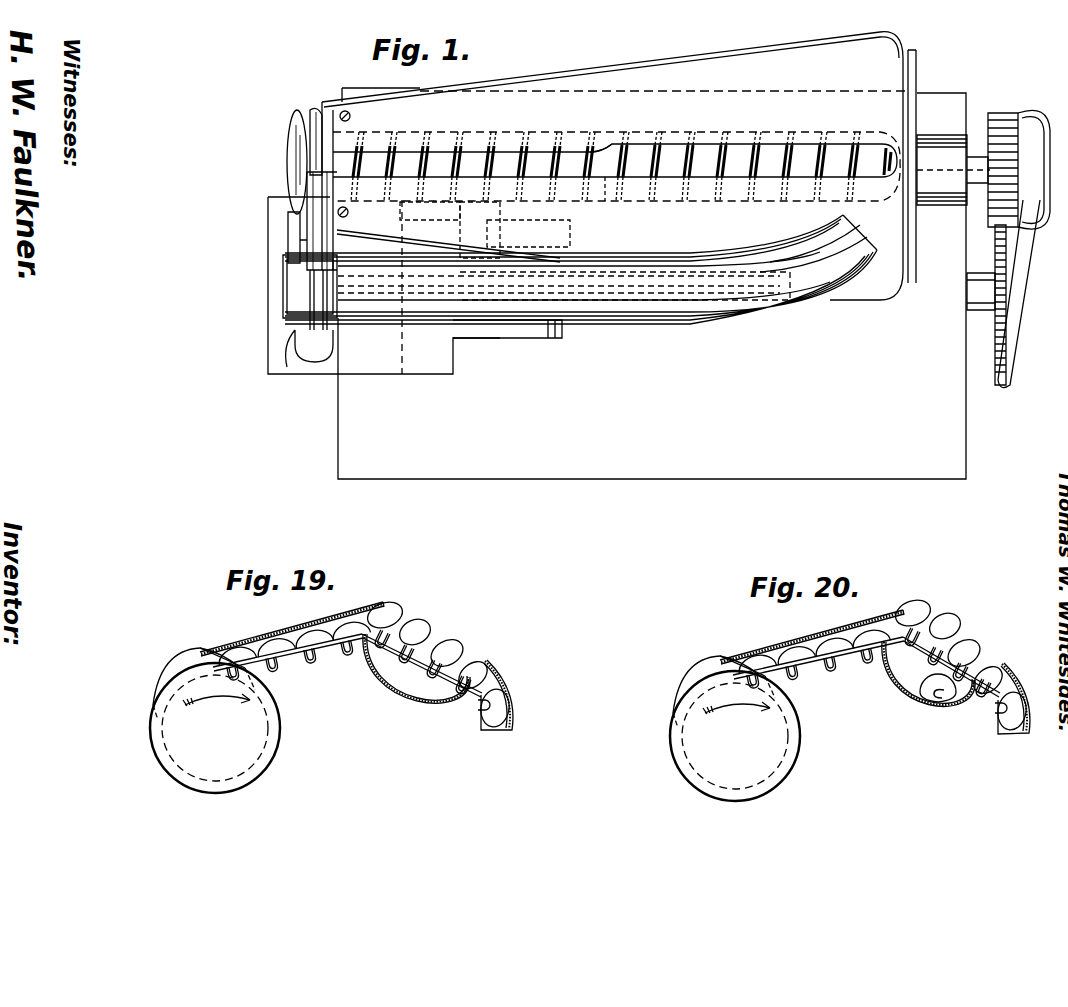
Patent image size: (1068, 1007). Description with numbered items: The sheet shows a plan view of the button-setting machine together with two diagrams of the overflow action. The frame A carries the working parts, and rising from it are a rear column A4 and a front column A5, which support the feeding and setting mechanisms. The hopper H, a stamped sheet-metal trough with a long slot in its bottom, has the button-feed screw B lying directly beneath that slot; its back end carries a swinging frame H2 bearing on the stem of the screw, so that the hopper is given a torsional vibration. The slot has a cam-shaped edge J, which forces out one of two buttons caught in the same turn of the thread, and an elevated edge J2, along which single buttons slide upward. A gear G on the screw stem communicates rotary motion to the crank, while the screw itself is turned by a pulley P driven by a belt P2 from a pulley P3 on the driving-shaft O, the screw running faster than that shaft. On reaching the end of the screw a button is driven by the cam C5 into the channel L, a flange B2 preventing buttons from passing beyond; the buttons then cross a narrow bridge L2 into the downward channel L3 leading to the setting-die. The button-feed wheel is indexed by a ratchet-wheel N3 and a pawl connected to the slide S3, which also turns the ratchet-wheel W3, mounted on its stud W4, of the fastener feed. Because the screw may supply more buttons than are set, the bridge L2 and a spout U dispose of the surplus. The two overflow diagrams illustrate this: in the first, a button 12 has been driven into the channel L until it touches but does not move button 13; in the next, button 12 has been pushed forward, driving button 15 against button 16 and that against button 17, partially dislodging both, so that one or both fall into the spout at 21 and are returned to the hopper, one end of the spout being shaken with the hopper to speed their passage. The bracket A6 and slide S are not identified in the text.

In FIG. 1, the frame A is at (652, 283).
In FIG. 1, the rear column A4 is at (938, 210).
In FIG. 1, the front column A5 is at (457, 351).
In FIG. 1, the bracket A6 is at (272, 342).
In FIG. 1, the button-feed screw B is at (616, 166).
In FIG. 19, the button-feed screw B is at (215, 728).
In FIG. 20, the button-feed screw B is at (735, 736).
In FIG. 1, the flange B2 is at (290, 115).
In FIG. 19, the flange B2 is at (160, 758).
In FIG. 20, the flange B2 is at (648, 768).
In FIG. 1, the cam C5 is at (316, 106).
In FIG. 19, the cam C5 is at (155, 678).
In FIG. 20, the cam C5 is at (708, 679).
In FIG. 1, the gear G is at (998, 112).
In FIG. 1, the hopper H is at (612, 166).
In FIG. 1, the swinging frame H2 is at (922, 72).
In FIG. 1, the cam-shaped edge of slot J is at (598, 150).
In FIG. 1, the elevated edge of slot J2 is at (612, 180).
In FIG. 1, the channel L is at (338, 243).
In FIG. 19, the channel L is at (300, 665).
In FIG. 20, the channel L is at (812, 658).
In FIG. 1, the bridge L2 is at (308, 290).
In FIG. 19, the bridge L2 is at (477, 667).
In FIG. 20, the bridge L2 is at (946, 667).
In FIG. 1, the channel L3 is at (336, 345).
In FIG. 19, the channel L3 is at (503, 680).
In FIG. 20, the channel L3 is at (983, 719).
In FIG. 1, the ratchet-wheel N3 is at (470, 330).
In FIG. 1, the driving-shaft O is at (978, 312).
In FIG. 1, the pulley P is at (1022, 112).
In FIG. 1, the belt P2 is at (1020, 300).
In FIG. 1, the pulley P3 is at (993, 390).
In FIG. 1, the slide S is at (290, 240).
In FIG. 1, the slide S3 is at (490, 225).
In FIG. 1, the spout U is at (581, 269).
In FIG. 19, the spout U is at (380, 683).
In FIG. 20, the spout U is at (908, 684).
In FIG. 1, the ratchet-wheel W3 is at (575, 243).
In FIG. 1, the stud W4 is at (530, 235).
In FIG. 19, the button 12 is at (238, 648).
In FIG. 20, the button 12 is at (756, 650).
In FIG. 19, the button 13 is at (275, 640).
In FIG. 20, the button 13 is at (795, 642).
In FIG. 19, the button 15 is at (351, 618).
In FIG. 20, the button 15 is at (854, 623).
In FIG. 19, the button 16 is at (392, 608).
In FIG. 20, the button 16 is at (926, 608).
In FIG. 19, the button 17 is at (425, 620).
In FIG. 20, the button 17 is at (966, 651).
In FIG. 20, the spout entry point 21 is at (922, 711).